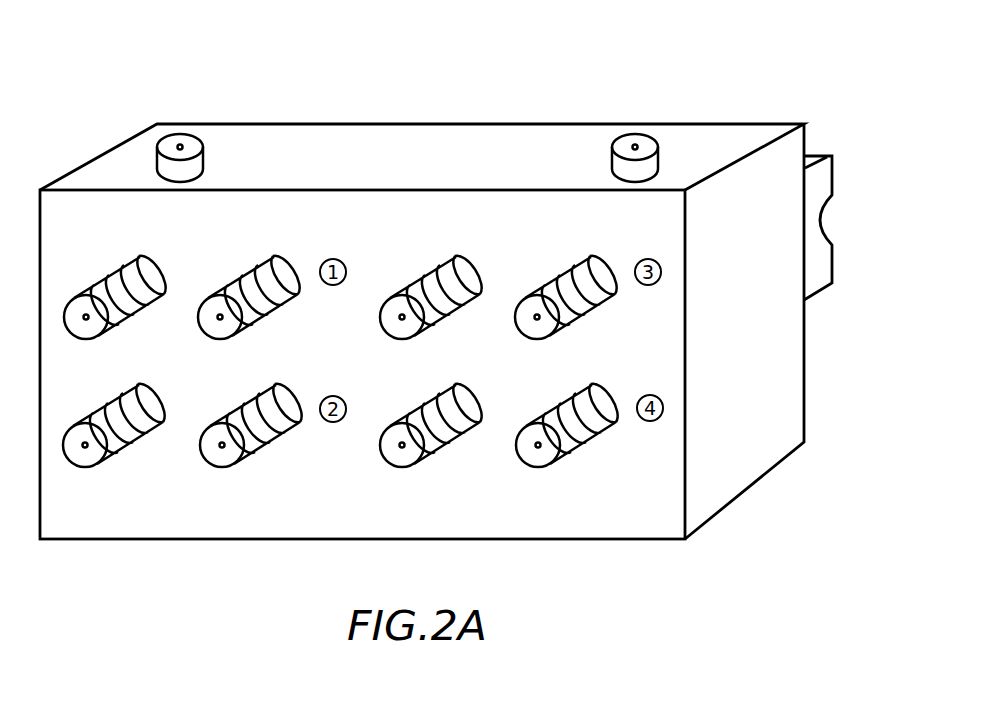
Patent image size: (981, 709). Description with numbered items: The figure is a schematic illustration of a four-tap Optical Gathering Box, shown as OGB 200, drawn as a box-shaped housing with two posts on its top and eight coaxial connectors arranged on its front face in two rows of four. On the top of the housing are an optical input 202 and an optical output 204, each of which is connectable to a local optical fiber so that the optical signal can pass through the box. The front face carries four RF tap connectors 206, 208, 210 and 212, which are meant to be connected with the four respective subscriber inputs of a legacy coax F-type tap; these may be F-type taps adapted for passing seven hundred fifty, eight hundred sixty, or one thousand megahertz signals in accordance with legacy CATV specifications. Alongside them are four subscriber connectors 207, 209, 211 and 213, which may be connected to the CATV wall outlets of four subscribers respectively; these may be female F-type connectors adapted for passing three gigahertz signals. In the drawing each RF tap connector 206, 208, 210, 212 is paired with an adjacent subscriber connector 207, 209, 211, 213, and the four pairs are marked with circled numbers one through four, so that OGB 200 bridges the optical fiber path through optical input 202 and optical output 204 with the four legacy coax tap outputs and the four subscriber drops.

The 4-tap Optical Gathering Box (OGB) 200 is at (607, 48).
The optical input 202 is at (195, 167).
The optical output 204 is at (653, 167).
The RF tap connector 206 is at (123, 278).
The subscriber connector 207 is at (260, 278).
The RF tap connector 208 is at (117, 440).
The subscriber connector 209 is at (254, 440).
The RF tap connector 210 is at (440, 278).
The subscriber connector 211 is at (575, 278).
The RF tap connector 212 is at (435, 440).
The subscriber connector 213 is at (570, 440).